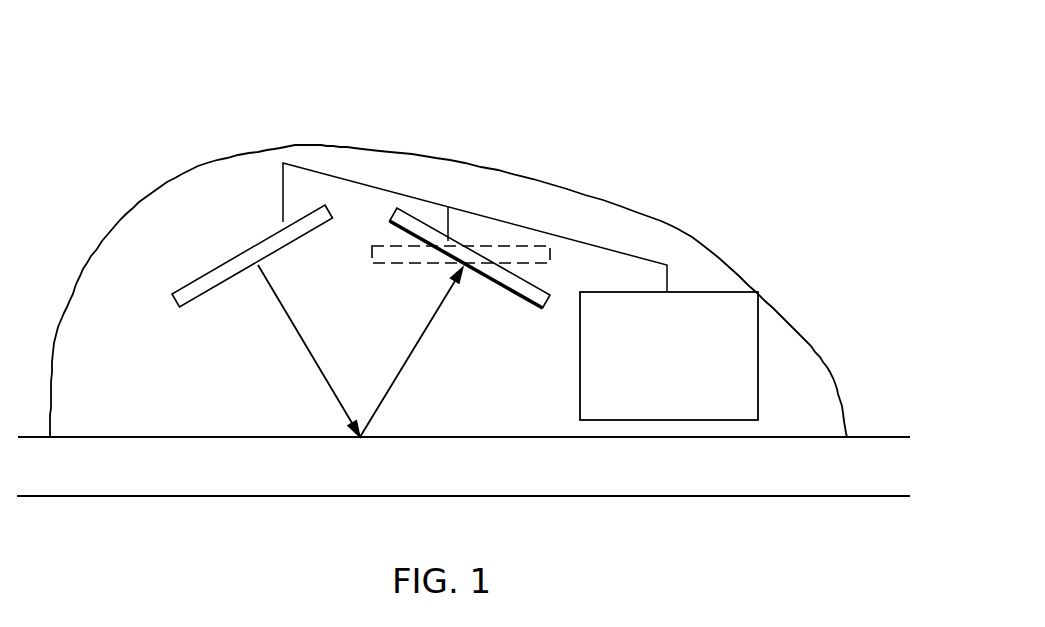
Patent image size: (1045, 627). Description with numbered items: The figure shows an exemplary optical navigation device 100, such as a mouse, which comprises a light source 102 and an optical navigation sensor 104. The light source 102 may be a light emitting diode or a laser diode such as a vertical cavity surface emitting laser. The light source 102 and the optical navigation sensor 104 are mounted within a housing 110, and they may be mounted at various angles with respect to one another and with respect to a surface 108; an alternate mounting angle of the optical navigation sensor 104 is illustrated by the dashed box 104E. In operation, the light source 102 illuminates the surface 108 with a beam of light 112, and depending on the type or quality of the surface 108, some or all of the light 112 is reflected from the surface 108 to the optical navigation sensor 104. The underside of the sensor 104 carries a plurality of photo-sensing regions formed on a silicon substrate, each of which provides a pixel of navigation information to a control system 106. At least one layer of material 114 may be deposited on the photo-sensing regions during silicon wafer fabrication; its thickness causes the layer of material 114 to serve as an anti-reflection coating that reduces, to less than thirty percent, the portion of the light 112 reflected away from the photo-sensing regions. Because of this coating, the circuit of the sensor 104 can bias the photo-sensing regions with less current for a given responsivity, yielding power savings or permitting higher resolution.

The optical navigation device 100 is at (609, 96).
The light source 102 is at (200, 275).
The optical navigation sensor 104 is at (538, 285).
The dashed box 104E is at (403, 264).
The control system 106 is at (648, 396).
The surface 108 is at (558, 477).
The housing 110 is at (664, 222).
The beam of light 112 is at (290, 322).
The layer of material 114 is at (517, 298).